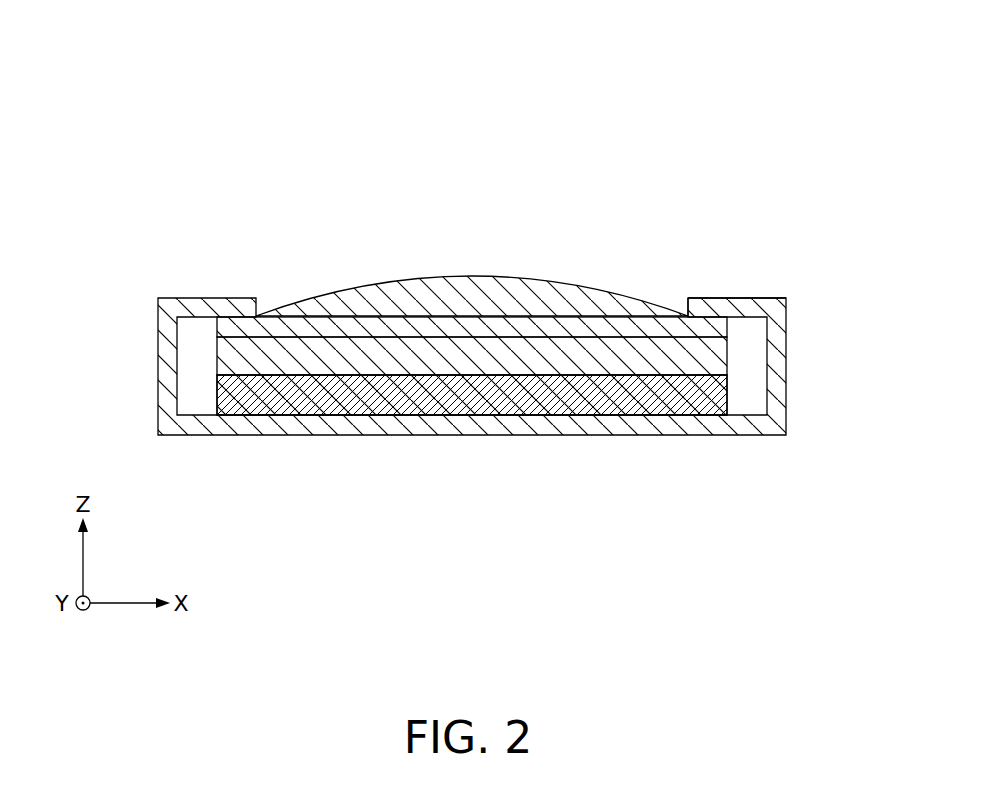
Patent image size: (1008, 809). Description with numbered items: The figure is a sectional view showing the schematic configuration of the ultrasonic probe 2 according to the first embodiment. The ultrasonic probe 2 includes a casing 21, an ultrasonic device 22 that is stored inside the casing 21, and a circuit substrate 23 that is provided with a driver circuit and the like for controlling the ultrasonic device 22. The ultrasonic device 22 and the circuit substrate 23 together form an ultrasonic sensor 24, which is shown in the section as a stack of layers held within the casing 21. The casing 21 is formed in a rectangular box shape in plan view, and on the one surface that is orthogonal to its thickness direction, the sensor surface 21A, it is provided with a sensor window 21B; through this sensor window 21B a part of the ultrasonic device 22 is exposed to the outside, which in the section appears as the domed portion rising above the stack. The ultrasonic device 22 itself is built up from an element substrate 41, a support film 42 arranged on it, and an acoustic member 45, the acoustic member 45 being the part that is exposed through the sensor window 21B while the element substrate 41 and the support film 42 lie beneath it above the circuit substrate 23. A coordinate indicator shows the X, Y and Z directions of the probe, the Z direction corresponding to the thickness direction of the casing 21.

The ultrasonic probe 2 is at (658, 89).
The casing 21 is at (513, 319).
The sensor surface 21A is at (730, 297).
The sensor window 21B is at (687, 309).
The ultrasonic device 22 is at (472, 266).
The circuit substrate 23 is at (375, 395).
The ultrasonic sensor 24 is at (472, 262).
The element substrate 41 is at (584, 330).
The support film 42 is at (530, 360).
The acoustic member 45 is at (630, 199).